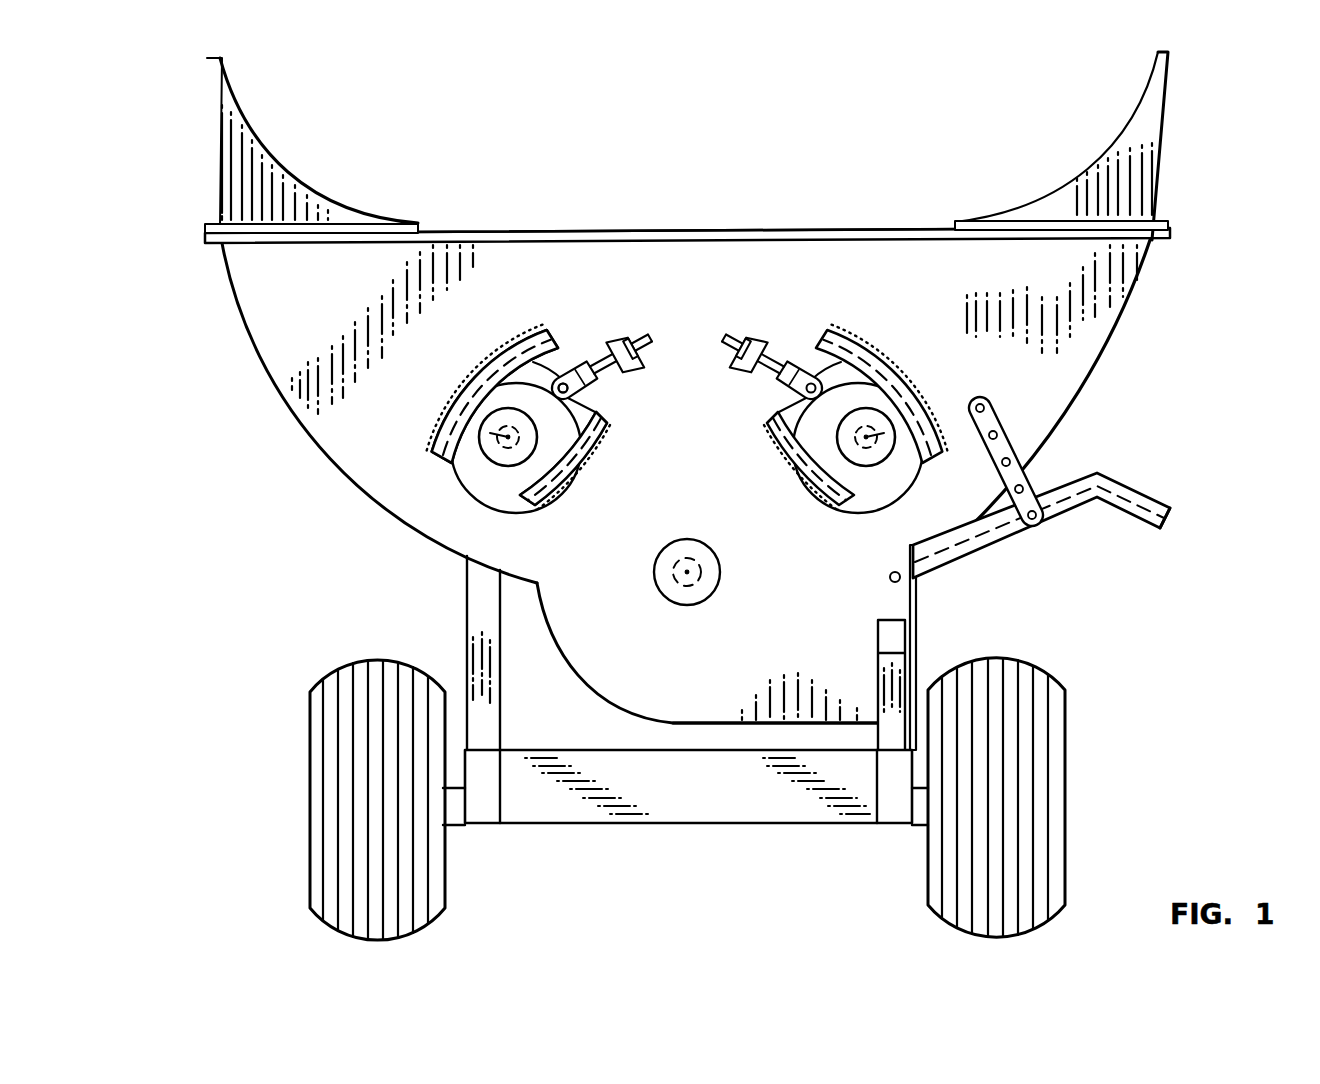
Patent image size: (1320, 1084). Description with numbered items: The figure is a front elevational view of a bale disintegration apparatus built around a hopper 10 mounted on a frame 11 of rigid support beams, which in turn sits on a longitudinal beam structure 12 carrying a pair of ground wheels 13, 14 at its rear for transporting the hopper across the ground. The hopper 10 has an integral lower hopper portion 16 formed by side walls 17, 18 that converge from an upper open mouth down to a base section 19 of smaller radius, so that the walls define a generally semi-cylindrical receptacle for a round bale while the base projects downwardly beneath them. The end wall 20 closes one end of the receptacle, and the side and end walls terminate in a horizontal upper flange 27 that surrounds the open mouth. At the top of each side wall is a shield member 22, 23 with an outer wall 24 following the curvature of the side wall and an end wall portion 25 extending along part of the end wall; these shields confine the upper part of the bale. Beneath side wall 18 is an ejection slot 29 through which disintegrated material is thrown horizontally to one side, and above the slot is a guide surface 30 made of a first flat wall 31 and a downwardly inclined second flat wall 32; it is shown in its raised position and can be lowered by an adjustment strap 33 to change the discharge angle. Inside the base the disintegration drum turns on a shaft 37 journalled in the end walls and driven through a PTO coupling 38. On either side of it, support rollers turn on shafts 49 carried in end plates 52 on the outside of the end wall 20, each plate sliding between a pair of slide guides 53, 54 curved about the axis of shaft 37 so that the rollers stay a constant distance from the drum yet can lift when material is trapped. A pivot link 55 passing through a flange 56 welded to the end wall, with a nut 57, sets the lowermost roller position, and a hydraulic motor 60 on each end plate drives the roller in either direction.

The hopper 10 is at (1175, 343).
The frame 11 is at (464, 617).
The longitudinal beam structure 12 is at (891, 821).
The ground wheel 13 is at (309, 736).
The ground wheel 14 is at (1050, 733).
The lower hopper portion 16 is at (727, 226).
The side wall 17 is at (338, 455).
The side wall 18 is at (1072, 414).
The base section 19 is at (680, 727).
The end wall 20 is at (592, 273).
The shield member 22 is at (285, 170).
The shield member 23 is at (1095, 155).
The outer wall 24 is at (212, 122).
The end wall portion 25 is at (1062, 200).
The horizontal upper flange 27 is at (818, 230).
The ejection slot 29 is at (919, 632).
The guide surface 30 is at (1071, 506).
The first flat wall 31 is at (990, 532).
The second flat wall 32 is at (1150, 490).
The adjustment strap 33 is at (1002, 418).
The shaft 37 is at (680, 569).
The PTO coupling 38 is at (662, 588).
The shaft 49 is at (466, 416).
The end plate 52 is at (583, 405).
The slide guide 53 is at (490, 385).
The slide guide 54 is at (570, 455).
The pivot link 55 is at (587, 368).
The flange 56 is at (614, 334).
The nut 57 is at (640, 356).
The hydraulic motor 60 is at (492, 453).